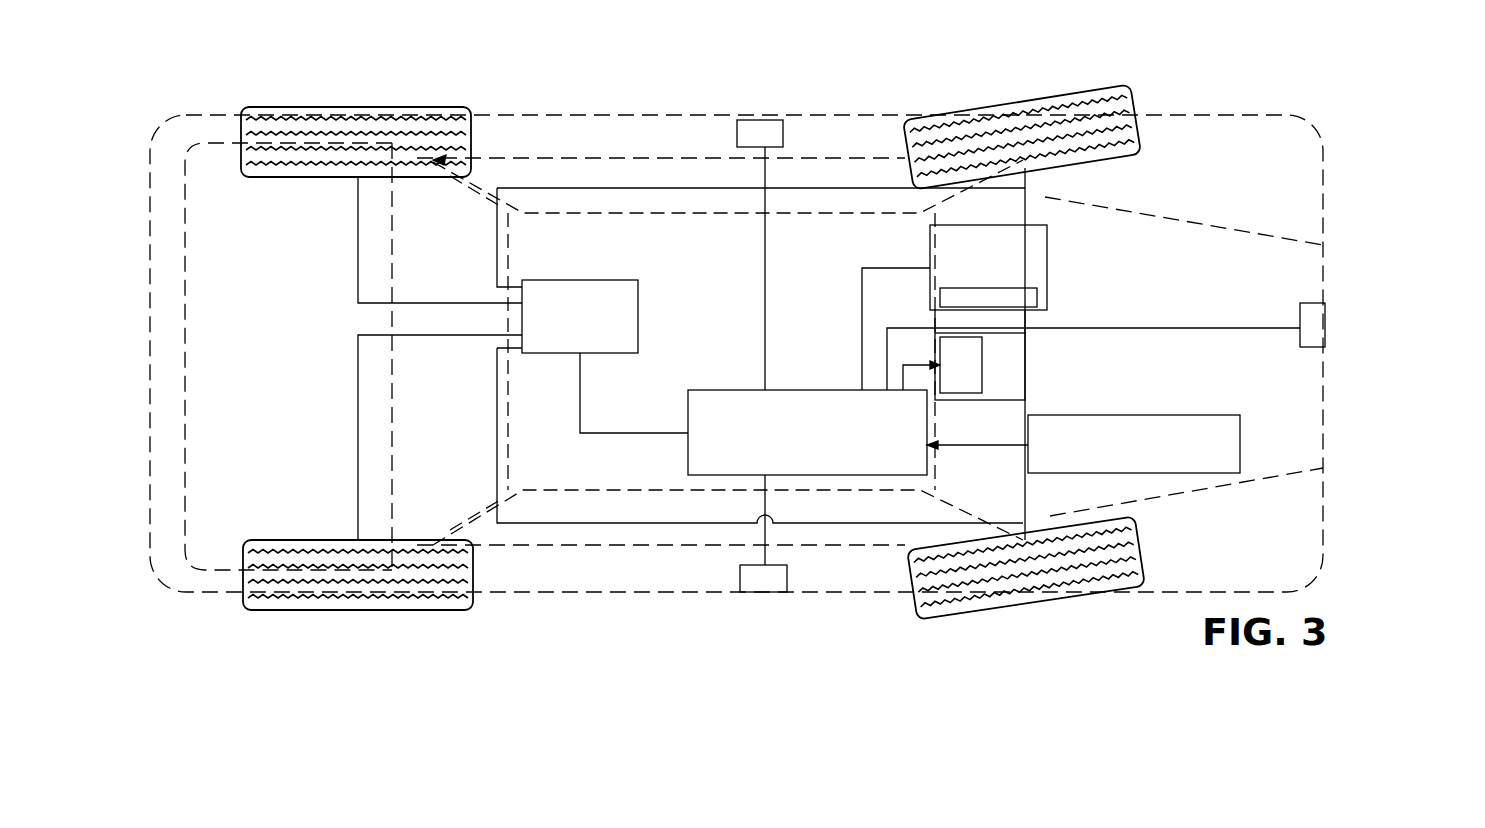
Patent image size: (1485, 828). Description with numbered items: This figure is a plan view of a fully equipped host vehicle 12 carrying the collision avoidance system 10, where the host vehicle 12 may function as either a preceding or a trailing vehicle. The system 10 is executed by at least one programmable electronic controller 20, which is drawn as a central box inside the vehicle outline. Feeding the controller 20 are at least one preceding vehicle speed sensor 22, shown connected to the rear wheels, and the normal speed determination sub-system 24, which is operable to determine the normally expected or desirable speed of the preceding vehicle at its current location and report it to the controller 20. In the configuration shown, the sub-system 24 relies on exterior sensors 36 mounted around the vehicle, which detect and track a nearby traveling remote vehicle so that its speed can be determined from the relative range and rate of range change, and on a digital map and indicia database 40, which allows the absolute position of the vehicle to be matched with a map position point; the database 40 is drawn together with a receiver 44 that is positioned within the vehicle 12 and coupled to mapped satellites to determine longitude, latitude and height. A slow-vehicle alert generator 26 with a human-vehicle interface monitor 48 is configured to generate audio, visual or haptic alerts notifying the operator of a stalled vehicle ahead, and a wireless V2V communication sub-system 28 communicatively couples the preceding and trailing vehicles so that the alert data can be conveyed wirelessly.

The collision avoidance system 10 is at (1383, 452).
The host vehicle 12 is at (632, 117).
The controller 20 is at (688, 474).
The preceding vehicle speed sensor 22 is at (640, 280).
The normal speed determination sub-system 24 is at (893, 240).
The slow-vehicle alert generator 26 is at (1025, 355).
The wireless V2V communication sub-system 28 is at (1240, 450).
The exterior sensor 36 is at (785, 130).
The digital map and indicia database 40 is at (1047, 272).
The receiver 44 is at (1020, 301).
The human-vehicle interface monitor 48 is at (982, 380).